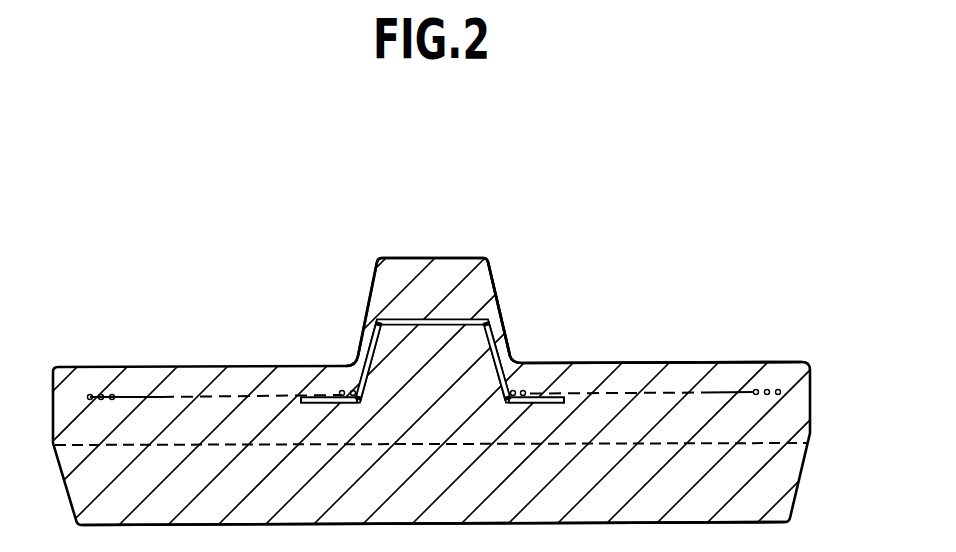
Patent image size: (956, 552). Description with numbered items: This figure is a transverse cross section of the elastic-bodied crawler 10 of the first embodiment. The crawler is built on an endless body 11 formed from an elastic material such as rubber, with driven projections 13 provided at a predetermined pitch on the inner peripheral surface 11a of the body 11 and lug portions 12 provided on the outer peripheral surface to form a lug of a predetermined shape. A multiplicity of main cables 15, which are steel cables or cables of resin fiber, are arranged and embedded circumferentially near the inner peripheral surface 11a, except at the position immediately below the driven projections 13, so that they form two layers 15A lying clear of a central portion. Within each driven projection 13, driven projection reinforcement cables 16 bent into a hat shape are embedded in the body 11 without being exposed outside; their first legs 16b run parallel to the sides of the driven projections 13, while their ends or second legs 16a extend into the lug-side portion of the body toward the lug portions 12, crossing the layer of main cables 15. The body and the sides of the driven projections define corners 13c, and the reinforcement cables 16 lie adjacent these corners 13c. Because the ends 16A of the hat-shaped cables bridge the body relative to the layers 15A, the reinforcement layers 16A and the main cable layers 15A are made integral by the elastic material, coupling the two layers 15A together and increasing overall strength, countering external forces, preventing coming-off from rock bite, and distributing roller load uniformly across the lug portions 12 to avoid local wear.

The elastic-bodied crawler 10 is at (614, 246).
The endless body 11 is at (797, 405).
The inner peripheral surface 11a is at (798, 362).
The lug portions 12 is at (787, 470).
The driven projections 13 is at (447, 262).
The corners 13c is at (350, 366).
The main cables 15 is at (197, 397).
The layers of the main cables 15A is at (124, 378).
The driven projection reinforcement cables 16 is at (412, 316).
The reinforcement layers 16A is at (489, 317).
The ends (second legs) 16a is at (302, 396).
The first legs 16b is at (356, 352).